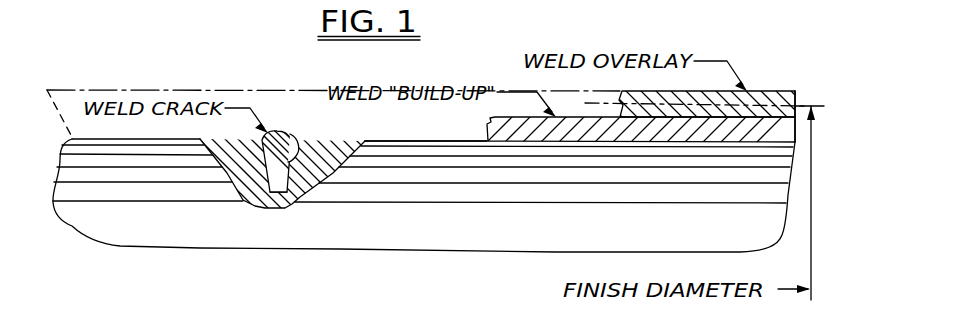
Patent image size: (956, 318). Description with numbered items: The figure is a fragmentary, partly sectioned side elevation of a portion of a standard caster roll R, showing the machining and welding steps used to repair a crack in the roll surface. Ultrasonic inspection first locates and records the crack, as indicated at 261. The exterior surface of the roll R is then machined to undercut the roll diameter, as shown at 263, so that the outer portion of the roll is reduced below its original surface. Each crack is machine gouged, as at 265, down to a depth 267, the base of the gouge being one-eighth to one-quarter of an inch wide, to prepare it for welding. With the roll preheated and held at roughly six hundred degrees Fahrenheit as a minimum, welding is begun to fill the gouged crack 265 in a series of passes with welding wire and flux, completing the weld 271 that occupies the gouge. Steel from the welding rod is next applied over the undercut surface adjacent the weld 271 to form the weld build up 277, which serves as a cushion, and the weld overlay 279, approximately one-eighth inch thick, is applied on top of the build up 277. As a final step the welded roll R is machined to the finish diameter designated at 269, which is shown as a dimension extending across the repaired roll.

The roll R is at (122, 246).
The crack location 261 is at (265, 176).
The undercut roll diameter 263 is at (440, 140).
The machine gouged crack 265 is at (294, 136).
The gouge depth 267 is at (285, 192).
The finish diameter 269 is at (800, 90).
The weld 271 is at (273, 131).
The weld build up 277 is at (569, 117).
The weld overlay 279 is at (759, 85).